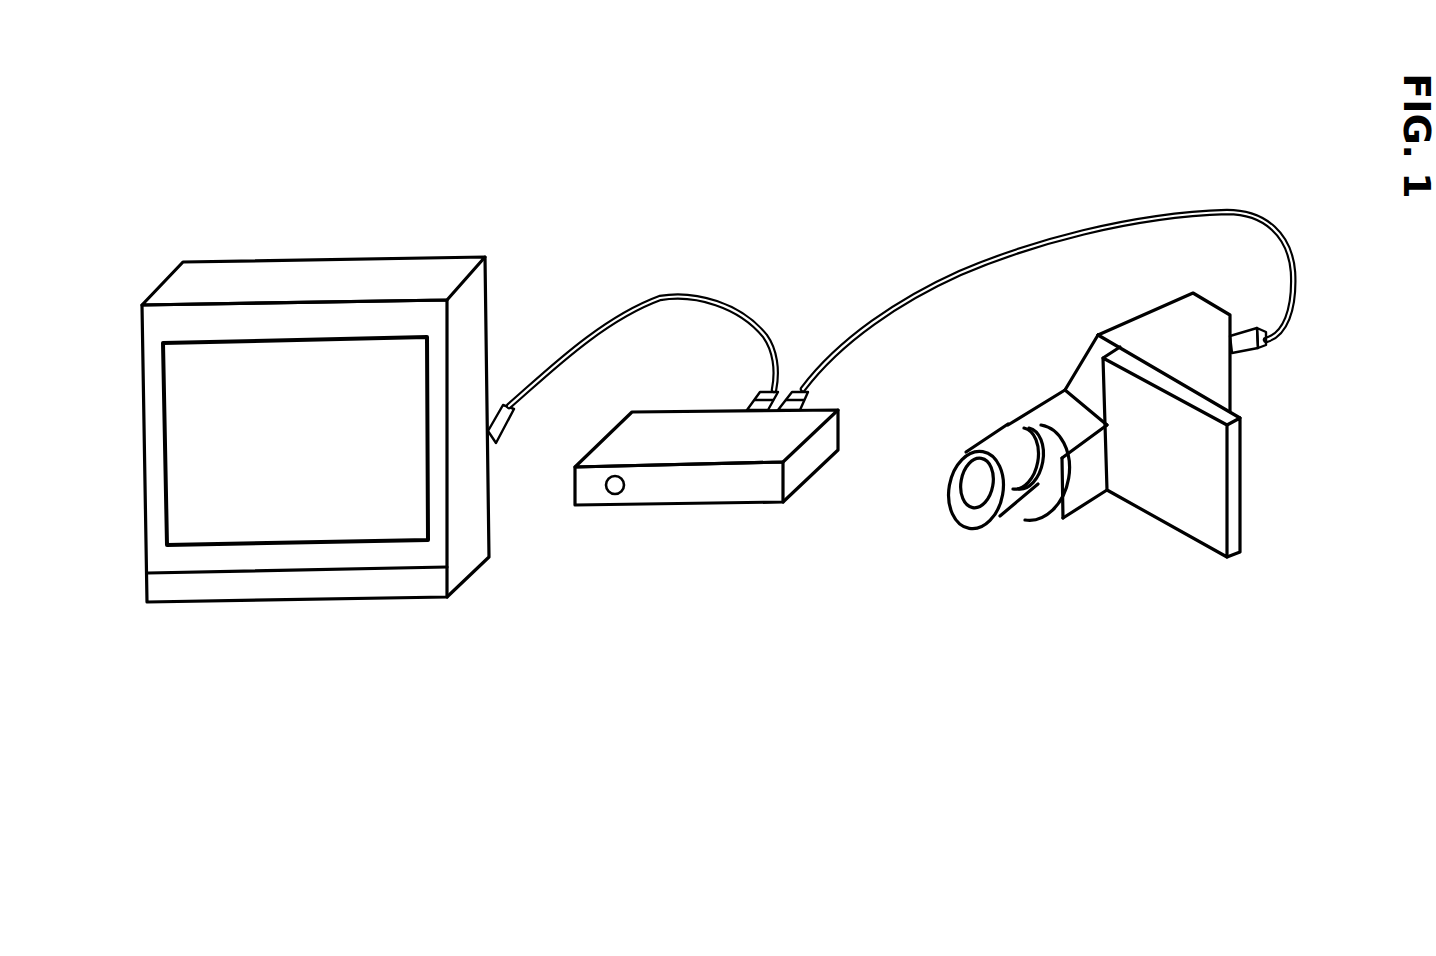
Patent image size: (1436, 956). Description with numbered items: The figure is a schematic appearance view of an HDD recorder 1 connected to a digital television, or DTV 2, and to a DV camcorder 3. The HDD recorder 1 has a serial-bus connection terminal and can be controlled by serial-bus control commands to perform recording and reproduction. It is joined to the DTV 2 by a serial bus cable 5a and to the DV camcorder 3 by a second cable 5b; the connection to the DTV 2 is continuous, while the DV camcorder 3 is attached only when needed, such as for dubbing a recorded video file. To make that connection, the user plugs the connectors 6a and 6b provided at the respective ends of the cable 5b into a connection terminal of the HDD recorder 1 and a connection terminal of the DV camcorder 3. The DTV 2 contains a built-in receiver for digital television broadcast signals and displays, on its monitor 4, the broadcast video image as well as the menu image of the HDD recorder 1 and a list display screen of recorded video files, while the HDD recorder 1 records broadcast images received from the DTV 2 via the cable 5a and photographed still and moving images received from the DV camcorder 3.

The HDD recorder 1 is at (828, 565).
The digital television 2 is at (355, 664).
The DV camcorder 3 is at (1284, 637).
The monitor 4 is at (227, 520).
The IEEE 1394 serial bus cable 5a is at (623, 305).
The IEEE 1394 serial bus cable 5b is at (1178, 207).
The connector 6a is at (782, 393).
The connector 6b is at (1245, 357).